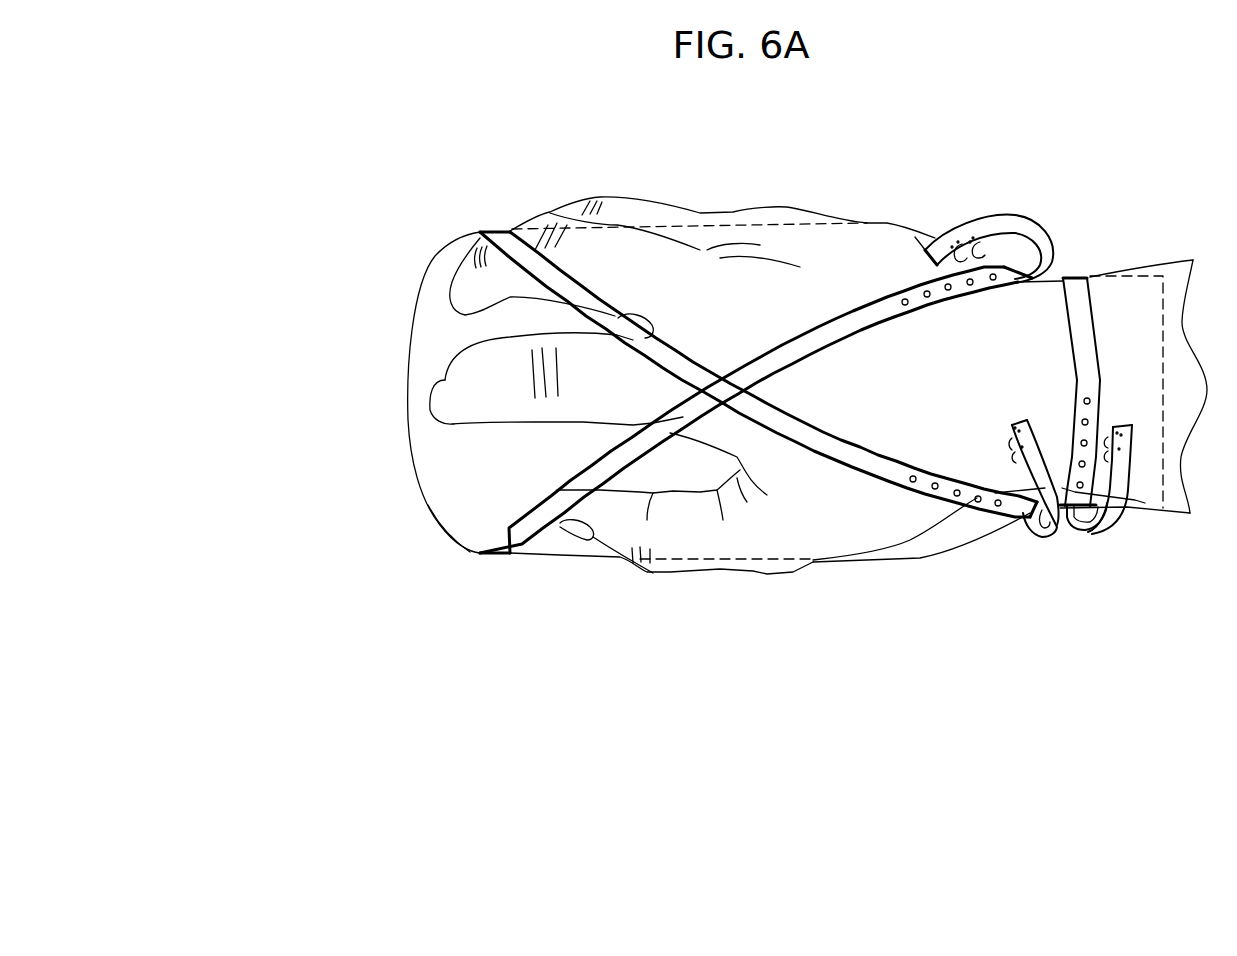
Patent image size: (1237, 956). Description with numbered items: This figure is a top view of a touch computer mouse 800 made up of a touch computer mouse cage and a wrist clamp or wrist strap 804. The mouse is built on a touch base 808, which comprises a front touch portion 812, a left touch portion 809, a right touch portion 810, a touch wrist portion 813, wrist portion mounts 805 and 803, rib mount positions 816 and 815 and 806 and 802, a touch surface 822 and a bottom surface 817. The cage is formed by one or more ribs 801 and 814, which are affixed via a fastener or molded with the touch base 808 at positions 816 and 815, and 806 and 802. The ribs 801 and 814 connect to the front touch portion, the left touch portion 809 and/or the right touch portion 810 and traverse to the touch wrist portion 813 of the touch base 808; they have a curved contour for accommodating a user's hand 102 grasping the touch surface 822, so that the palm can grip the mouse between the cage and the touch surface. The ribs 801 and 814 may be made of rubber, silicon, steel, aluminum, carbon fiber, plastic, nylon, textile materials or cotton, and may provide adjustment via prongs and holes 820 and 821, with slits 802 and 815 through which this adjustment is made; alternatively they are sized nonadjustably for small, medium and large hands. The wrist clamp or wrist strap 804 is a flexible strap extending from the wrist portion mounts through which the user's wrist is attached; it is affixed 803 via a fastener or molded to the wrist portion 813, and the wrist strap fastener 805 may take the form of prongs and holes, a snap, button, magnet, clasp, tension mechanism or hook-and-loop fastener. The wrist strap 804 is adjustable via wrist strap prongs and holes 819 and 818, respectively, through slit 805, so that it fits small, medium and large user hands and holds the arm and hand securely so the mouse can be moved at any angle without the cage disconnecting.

The touch computer mouse 800 is at (368, 171).
The user's hand 102 is at (860, 245).
The rib 801 is at (810, 430).
The rib mount position / slit 802 is at (1003, 262).
The wrist portion mount 803 is at (1078, 278).
The wrist clamp or wrist strap 804 is at (1075, 355).
The wrist strap fastener / wrist portion mount 805 is at (1082, 530).
The rib mount position 806 is at (495, 557).
The touch base 808 is at (596, 557).
The left touch portion 809 is at (522, 557).
The right touch portion 810 is at (510, 231).
The front touch portion 812 is at (410, 383).
The touch wrist portion 813 is at (1140, 515).
The rib 814 is at (792, 340).
The rib mount position / slit 815 is at (1013, 515).
The rib mount position 816 is at (490, 232).
The bottom surface 817 is at (475, 487).
The wrist strap holes 818 is at (1083, 400).
The wrist strap prongs 819 is at (1106, 430).
The rib prongs 820 is at (964, 264).
The rib holes 821 is at (905, 305).
The touch surface 822 is at (510, 452).